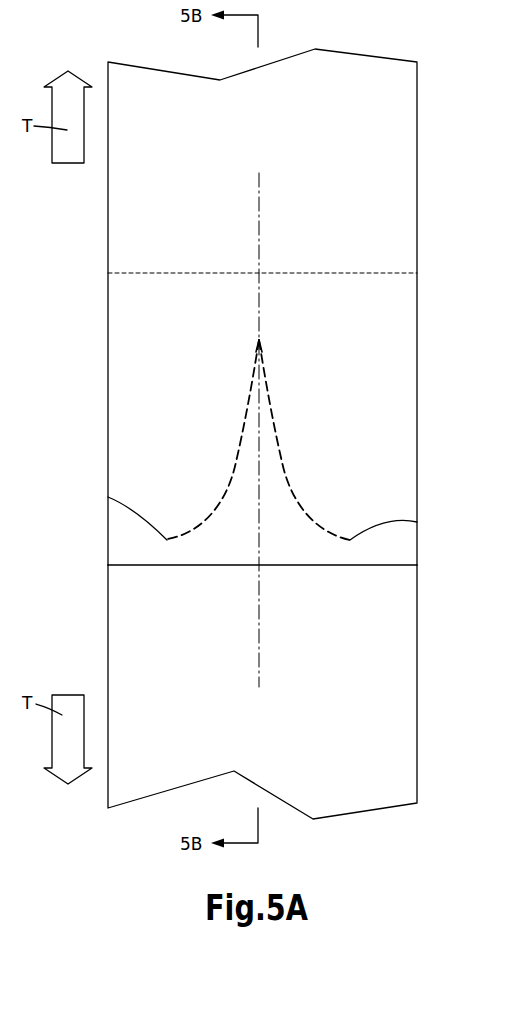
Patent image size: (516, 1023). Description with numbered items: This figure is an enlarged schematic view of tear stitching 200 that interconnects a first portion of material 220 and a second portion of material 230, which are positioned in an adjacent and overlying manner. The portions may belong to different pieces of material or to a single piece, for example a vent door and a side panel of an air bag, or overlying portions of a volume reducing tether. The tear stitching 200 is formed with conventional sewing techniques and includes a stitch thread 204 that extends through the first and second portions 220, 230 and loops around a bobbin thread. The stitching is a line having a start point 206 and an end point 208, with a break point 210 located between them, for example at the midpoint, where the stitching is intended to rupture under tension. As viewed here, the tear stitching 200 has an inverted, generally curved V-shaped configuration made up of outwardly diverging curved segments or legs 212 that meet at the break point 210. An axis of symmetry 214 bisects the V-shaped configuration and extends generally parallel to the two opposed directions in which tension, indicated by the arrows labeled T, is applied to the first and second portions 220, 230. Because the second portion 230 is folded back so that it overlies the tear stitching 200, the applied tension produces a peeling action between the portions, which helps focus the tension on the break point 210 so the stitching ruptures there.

The tear stitching 200 is at (301, 443).
The stitch thread 204 is at (306, 500).
The start point 206 is at (108, 497).
The end point 208 is at (417, 522).
The break point 210 is at (258, 338).
The curved segments or legs 212 is at (282, 460).
The axis of symmetry 214 is at (258, 637).
The first portion of material 220 is at (355, 185).
The second portion of material 230 is at (348, 713).